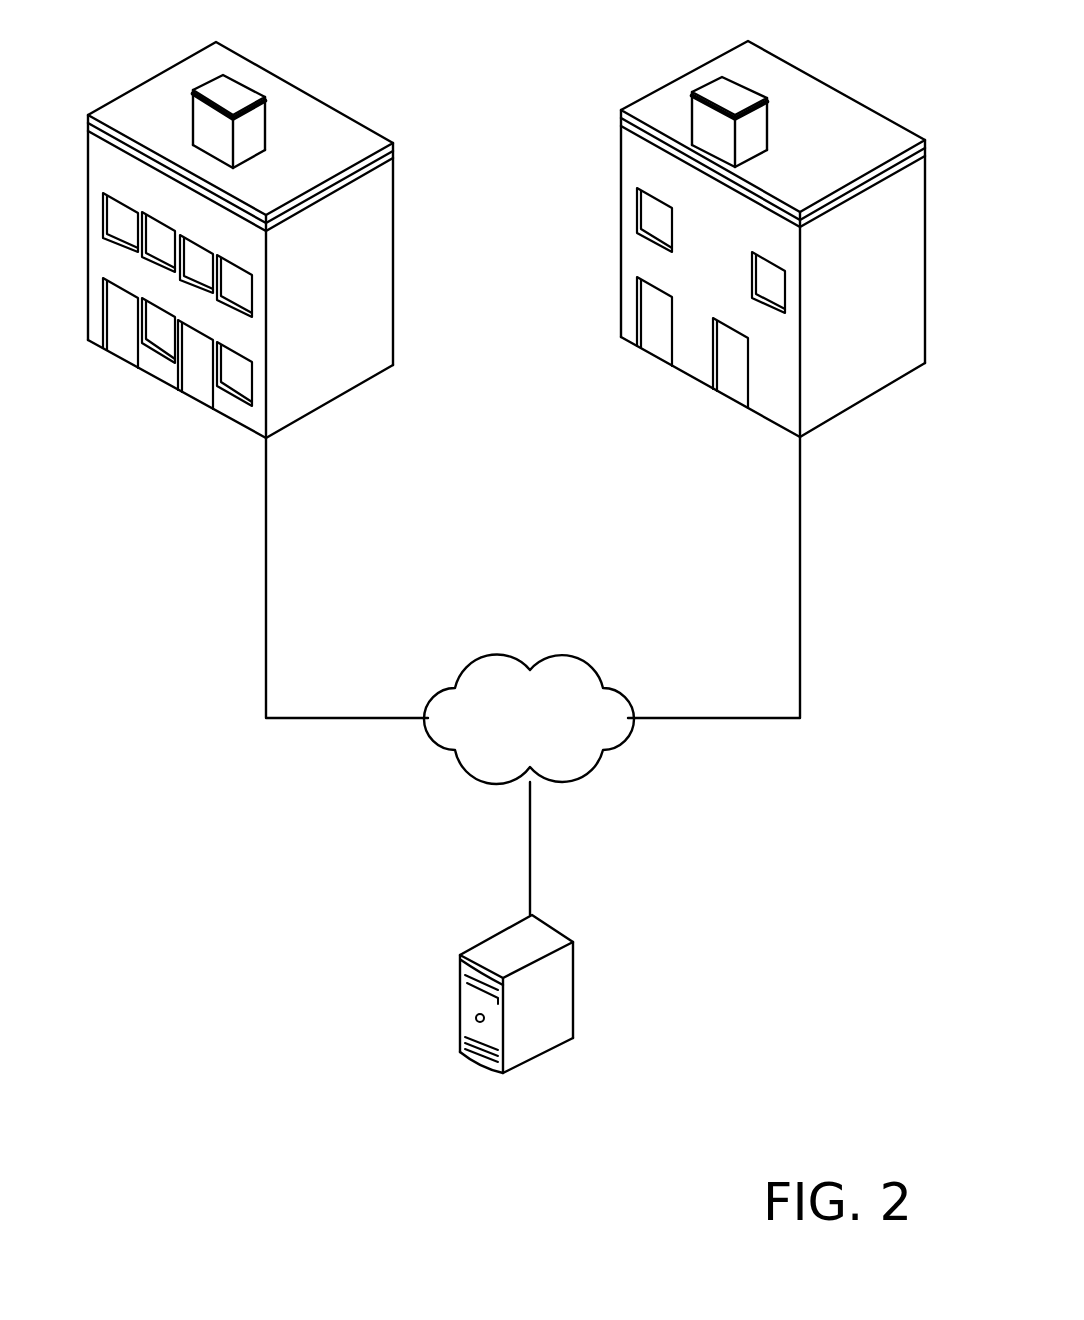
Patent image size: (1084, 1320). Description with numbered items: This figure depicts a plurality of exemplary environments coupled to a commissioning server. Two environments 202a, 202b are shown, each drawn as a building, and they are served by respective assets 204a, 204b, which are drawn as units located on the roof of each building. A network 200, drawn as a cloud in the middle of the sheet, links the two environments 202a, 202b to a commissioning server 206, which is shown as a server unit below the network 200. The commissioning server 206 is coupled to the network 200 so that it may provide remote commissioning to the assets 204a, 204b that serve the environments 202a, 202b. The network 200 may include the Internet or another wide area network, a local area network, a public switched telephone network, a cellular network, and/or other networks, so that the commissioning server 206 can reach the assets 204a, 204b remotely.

The network 200 is at (560, 657).
The environment 202a is at (394, 142).
The environment 202b is at (799, 64).
The asset 204a is at (262, 102).
The asset 204b is at (720, 76).
The commissioning server 206 is at (573, 942).